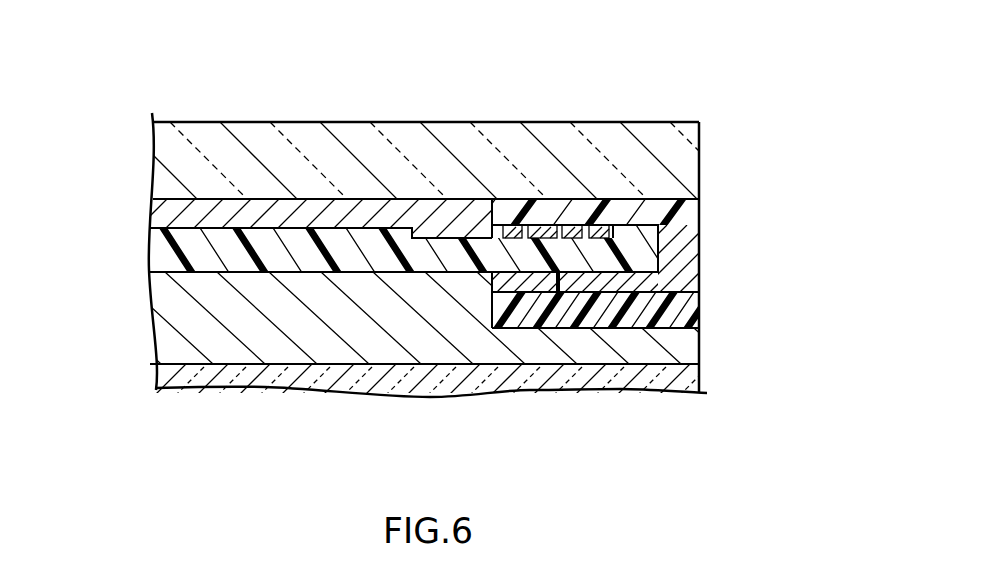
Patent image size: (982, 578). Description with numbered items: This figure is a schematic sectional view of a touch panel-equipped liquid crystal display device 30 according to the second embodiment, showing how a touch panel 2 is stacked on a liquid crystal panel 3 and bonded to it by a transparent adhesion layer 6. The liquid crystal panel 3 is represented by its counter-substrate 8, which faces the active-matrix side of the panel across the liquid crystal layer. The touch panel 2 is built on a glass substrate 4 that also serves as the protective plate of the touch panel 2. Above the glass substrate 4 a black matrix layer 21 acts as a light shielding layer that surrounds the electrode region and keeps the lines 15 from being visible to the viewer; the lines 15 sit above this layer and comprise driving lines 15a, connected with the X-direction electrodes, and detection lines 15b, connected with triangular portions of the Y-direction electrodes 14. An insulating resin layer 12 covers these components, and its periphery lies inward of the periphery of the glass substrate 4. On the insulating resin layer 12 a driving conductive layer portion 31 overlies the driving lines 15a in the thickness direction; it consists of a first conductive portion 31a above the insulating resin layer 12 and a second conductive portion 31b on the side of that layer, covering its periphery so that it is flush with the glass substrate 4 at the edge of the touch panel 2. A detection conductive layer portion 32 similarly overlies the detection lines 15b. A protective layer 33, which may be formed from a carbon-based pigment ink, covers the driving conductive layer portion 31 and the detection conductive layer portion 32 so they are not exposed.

The touch panel 2 is at (444, 121).
The liquid crystal panel 3 is at (450, 395).
The glass substrate 4 is at (315, 132).
The transparent adhesion layer 6 is at (165, 330).
The counter-substrate 8 is at (329, 383).
The insulating resin layer 12 is at (165, 247).
The Y-direction electrodes 14 is at (387, 207).
The lines 15 is at (558, 131).
The driving lines 15a is at (572, 233).
The detection lines 15b is at (515, 233).
The black matrix layer 21 is at (683, 215).
The touch panel-equipped liquid crystal display device 30 is at (718, 87).
The driving conductive layer portion 31 is at (647, 340).
The first conductive portion 31a is at (617, 282).
The second conductive portion 31b is at (634, 360).
The detection conductive layer portion 32 is at (535, 287).
The protective layer 33 is at (688, 312).